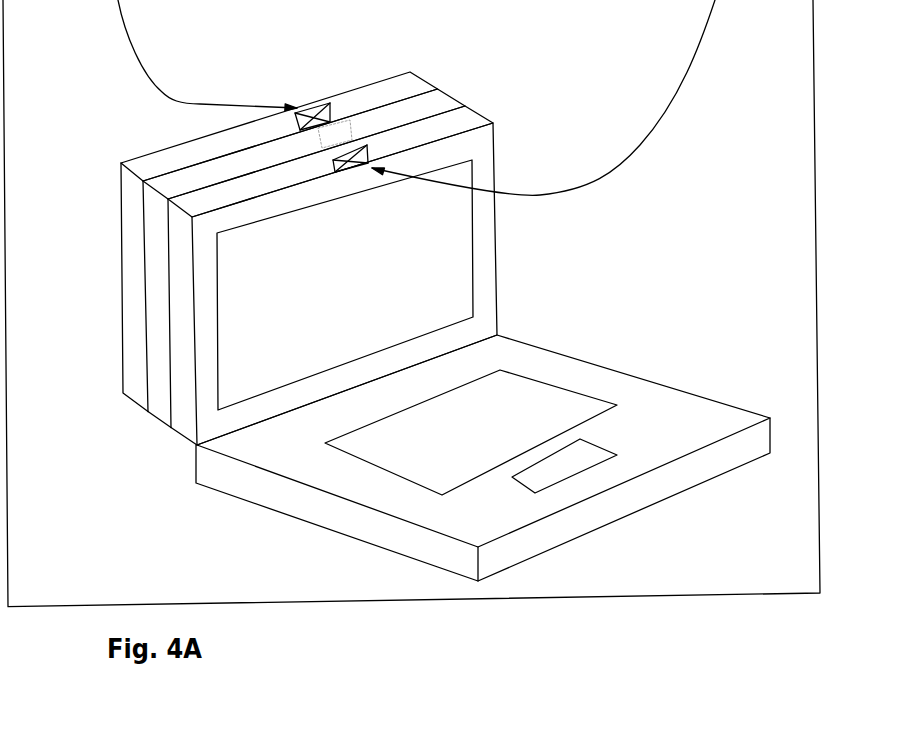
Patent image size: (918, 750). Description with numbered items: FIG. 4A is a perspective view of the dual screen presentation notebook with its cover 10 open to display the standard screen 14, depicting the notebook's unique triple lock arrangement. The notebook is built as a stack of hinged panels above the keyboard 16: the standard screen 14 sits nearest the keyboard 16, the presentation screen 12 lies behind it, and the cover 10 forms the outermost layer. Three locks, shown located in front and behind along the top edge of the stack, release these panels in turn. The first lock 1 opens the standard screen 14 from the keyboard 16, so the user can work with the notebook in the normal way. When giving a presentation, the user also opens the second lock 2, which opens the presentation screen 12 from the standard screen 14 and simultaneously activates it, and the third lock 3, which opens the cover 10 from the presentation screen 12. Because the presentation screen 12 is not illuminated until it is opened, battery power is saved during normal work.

The first lock 1 is at (319, 163).
The second lock 2 is at (367, 127).
The third lock 3 is at (293, 127).
The cover 10 is at (413, 87).
The presentation screen 12 is at (438, 105).
The standard screen 14 is at (462, 123).
The keyboard 16 is at (548, 387).